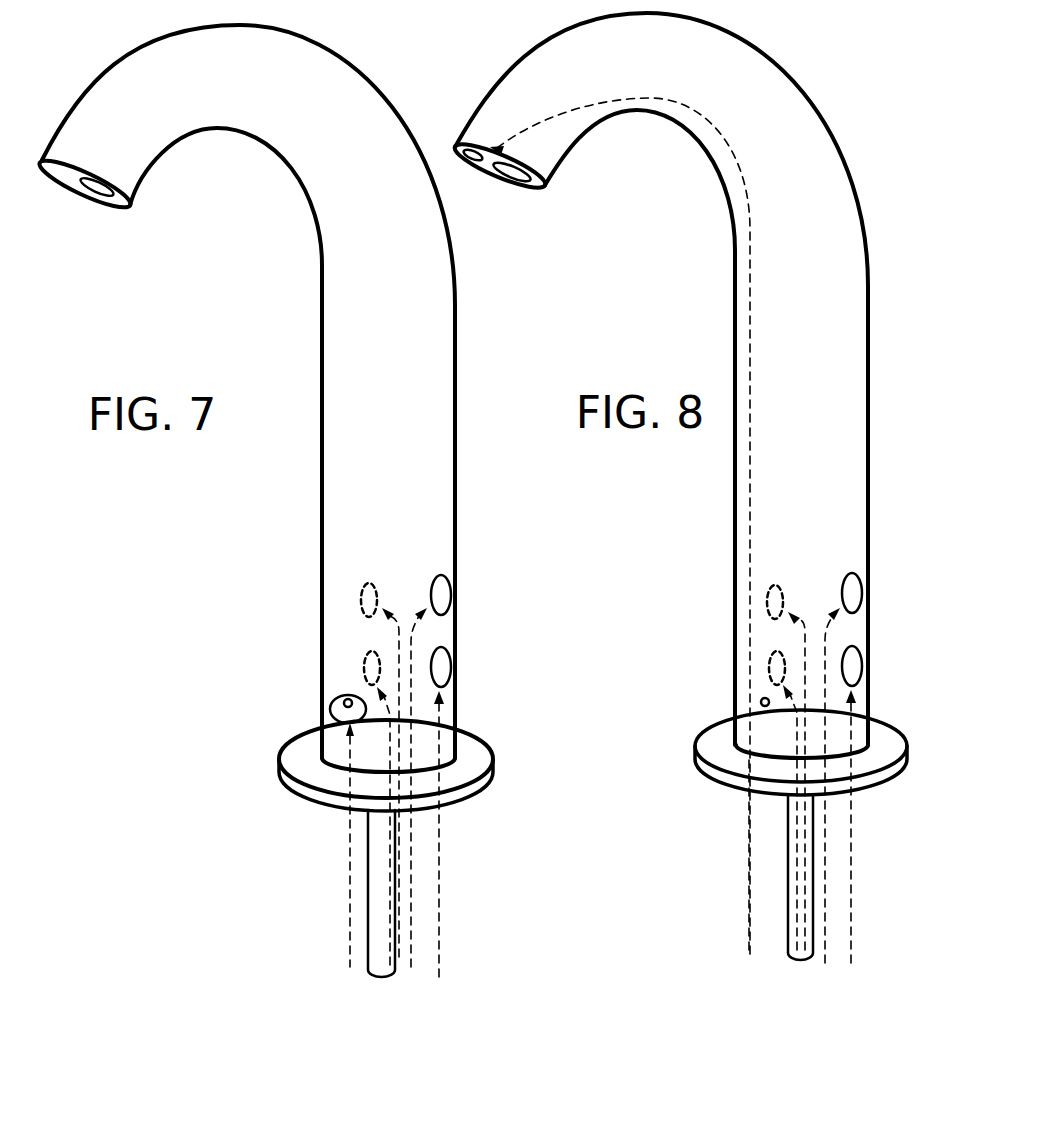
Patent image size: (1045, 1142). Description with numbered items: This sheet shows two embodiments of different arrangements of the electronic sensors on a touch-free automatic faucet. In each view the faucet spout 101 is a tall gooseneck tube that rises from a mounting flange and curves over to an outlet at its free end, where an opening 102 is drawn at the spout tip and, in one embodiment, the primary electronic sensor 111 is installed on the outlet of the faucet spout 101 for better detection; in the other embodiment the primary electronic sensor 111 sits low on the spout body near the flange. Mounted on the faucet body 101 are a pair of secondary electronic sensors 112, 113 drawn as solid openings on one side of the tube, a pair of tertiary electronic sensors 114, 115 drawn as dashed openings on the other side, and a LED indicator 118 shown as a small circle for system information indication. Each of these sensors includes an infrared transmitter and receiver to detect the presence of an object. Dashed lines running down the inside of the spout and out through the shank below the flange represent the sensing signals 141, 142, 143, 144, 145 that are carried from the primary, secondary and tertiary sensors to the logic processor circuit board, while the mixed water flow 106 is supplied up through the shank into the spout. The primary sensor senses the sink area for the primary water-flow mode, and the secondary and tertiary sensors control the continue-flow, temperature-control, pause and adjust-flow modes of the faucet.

In FIG. 7, the faucet spout 101 is at (364, 67).
In FIG. 8, the faucet spout 101 is at (829, 104).
In FIG. 7, the water outlet 102 is at (90, 198).
In FIG. 8, the water outlet 102 is at (523, 191).
In FIG. 7, the mixed water flow 106 is at (364, 824).
In FIG. 8, the mixed water flow 106 is at (783, 816).
In FIG. 7, the primary electronic sensor 111 is at (336, 723).
In FIG. 8, the primary electronic sensor 111 is at (474, 168).
In FIG. 7, the secondary electronic sensor 112 is at (455, 592).
In FIG. 8, the secondary electronic sensor 112 is at (865, 591).
In FIG. 7, the secondary electronic sensor 113 is at (455, 663).
In FIG. 8, the secondary electronic sensor 113 is at (865, 663).
In FIG. 7, the tertiary electronic sensor 114 is at (360, 590).
In FIG. 8, the tertiary electronic sensor 114 is at (766, 585).
In FIG. 7, the tertiary electronic sensor 115 is at (361, 657).
In FIG. 8, the tertiary electronic sensor 115 is at (767, 657).
In FIG. 7, the LED indicator 118 is at (342, 702).
In FIG. 8, the LED indicator 118 is at (759, 702).
In FIG. 7, the sensing signal 141 is at (346, 935).
In FIG. 8, the sensing signal 141 is at (746, 920).
In FIG. 7, the sensing signal 142 is at (414, 851).
In FIG. 8, the sensing signal 142 is at (825, 872).
In FIG. 7, the sensing signal 143 is at (442, 882).
In FIG. 8, the sensing signal 143 is at (855, 908).
In FIG. 7, the sensing signal 144 is at (402, 938).
In FIG. 8, the sensing signal 144 is at (801, 849).
In FIG. 7, the sensing signal 145 is at (385, 892).
In FIG. 8, the sensing signal 145 is at (790, 890).